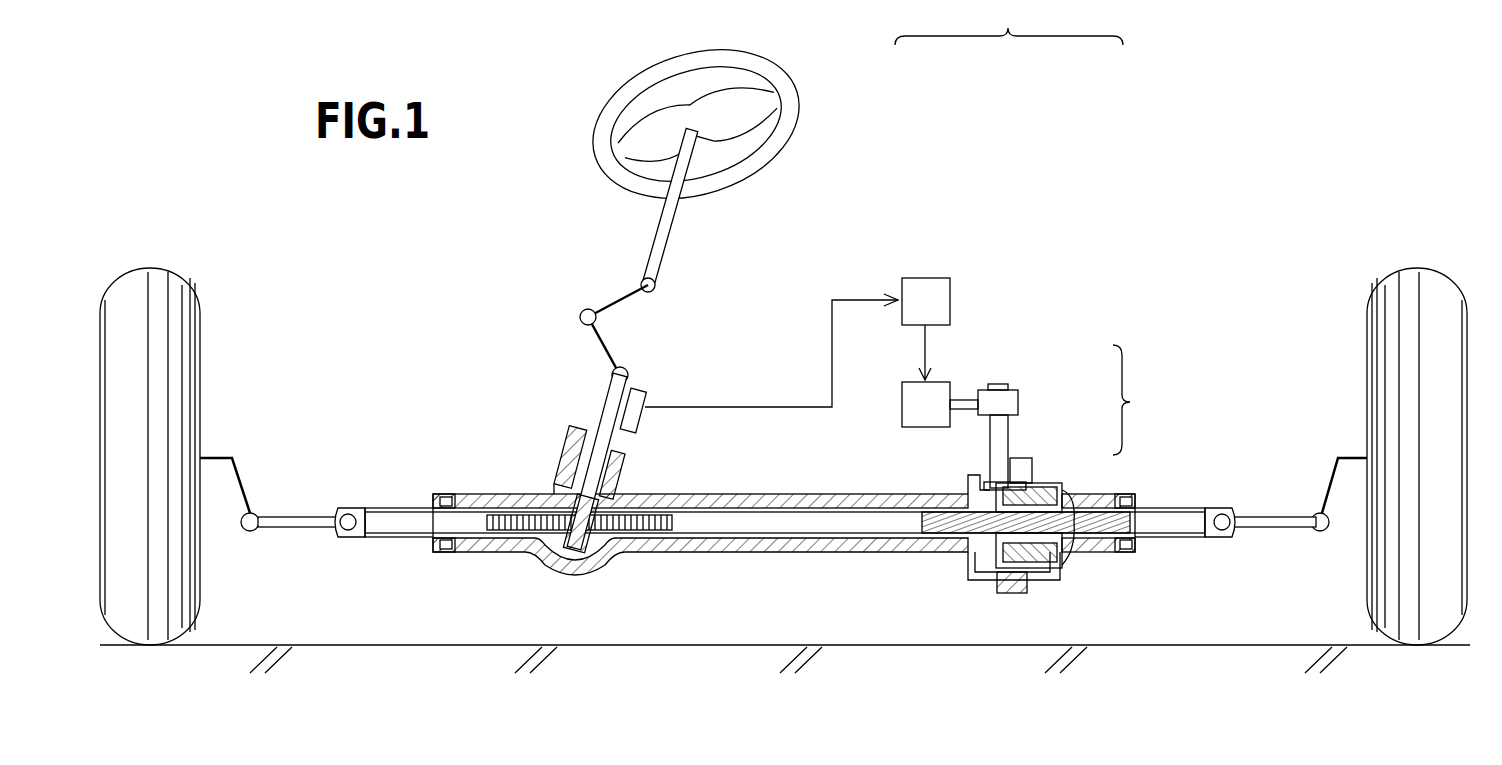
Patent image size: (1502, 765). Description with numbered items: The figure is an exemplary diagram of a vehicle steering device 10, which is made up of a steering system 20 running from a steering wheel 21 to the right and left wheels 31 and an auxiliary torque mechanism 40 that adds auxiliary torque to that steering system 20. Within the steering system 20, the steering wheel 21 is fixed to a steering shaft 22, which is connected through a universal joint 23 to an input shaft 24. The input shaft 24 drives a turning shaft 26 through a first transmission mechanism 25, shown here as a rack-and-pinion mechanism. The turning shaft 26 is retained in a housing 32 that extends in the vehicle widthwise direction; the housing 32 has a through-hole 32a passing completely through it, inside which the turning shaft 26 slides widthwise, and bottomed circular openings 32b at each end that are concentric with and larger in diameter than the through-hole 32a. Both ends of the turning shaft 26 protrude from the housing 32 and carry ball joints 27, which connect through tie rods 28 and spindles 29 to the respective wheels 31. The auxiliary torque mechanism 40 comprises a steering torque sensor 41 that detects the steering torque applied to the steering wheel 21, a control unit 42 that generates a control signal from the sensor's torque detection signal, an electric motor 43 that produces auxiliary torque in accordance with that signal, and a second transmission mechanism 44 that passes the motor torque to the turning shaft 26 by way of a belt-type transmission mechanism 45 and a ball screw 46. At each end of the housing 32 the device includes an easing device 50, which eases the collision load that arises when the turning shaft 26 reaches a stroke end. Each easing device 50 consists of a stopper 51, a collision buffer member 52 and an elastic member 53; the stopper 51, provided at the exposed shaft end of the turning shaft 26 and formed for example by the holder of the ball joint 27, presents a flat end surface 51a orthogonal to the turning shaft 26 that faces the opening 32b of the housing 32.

The vehicle steering device 10 is at (1009, 22).
The steering system 20 is at (832, 142).
The steering wheel 21 is at (600, 94).
The steering shaft 22 is at (656, 236).
The universal joint 23 is at (578, 317).
The input shaft 24 is at (605, 404).
The first transmission mechanism 25 is at (578, 525).
The turning shaft 26 is at (472, 514).
The ball joint 27 is at (349, 514).
The tie rod 28 is at (290, 517).
The spindle 29 is at (217, 457).
The wheel 31 is at (185, 315).
The housing 32 is at (786, 553).
The through-hole 32a is at (852, 523).
The opening 32b is at (432, 496).
The auxiliary torque mechanism 40 is at (1025, 268).
The steering torque sensor 41 is at (645, 388).
The control unit 42 is at (926, 285).
The electric motor 43 is at (906, 404).
The second transmission mechanism 44 is at (1141, 400).
The belt-type transmission mechanism 45 is at (1012, 392).
The ball screw 46 is at (1032, 480).
The easing device 50 is at (415, 558).
The stopper 51 is at (343, 537).
The end surface 51a is at (385, 538).
The collision buffer member 52 is at (462, 540).
The elastic member 53 is at (446, 552).